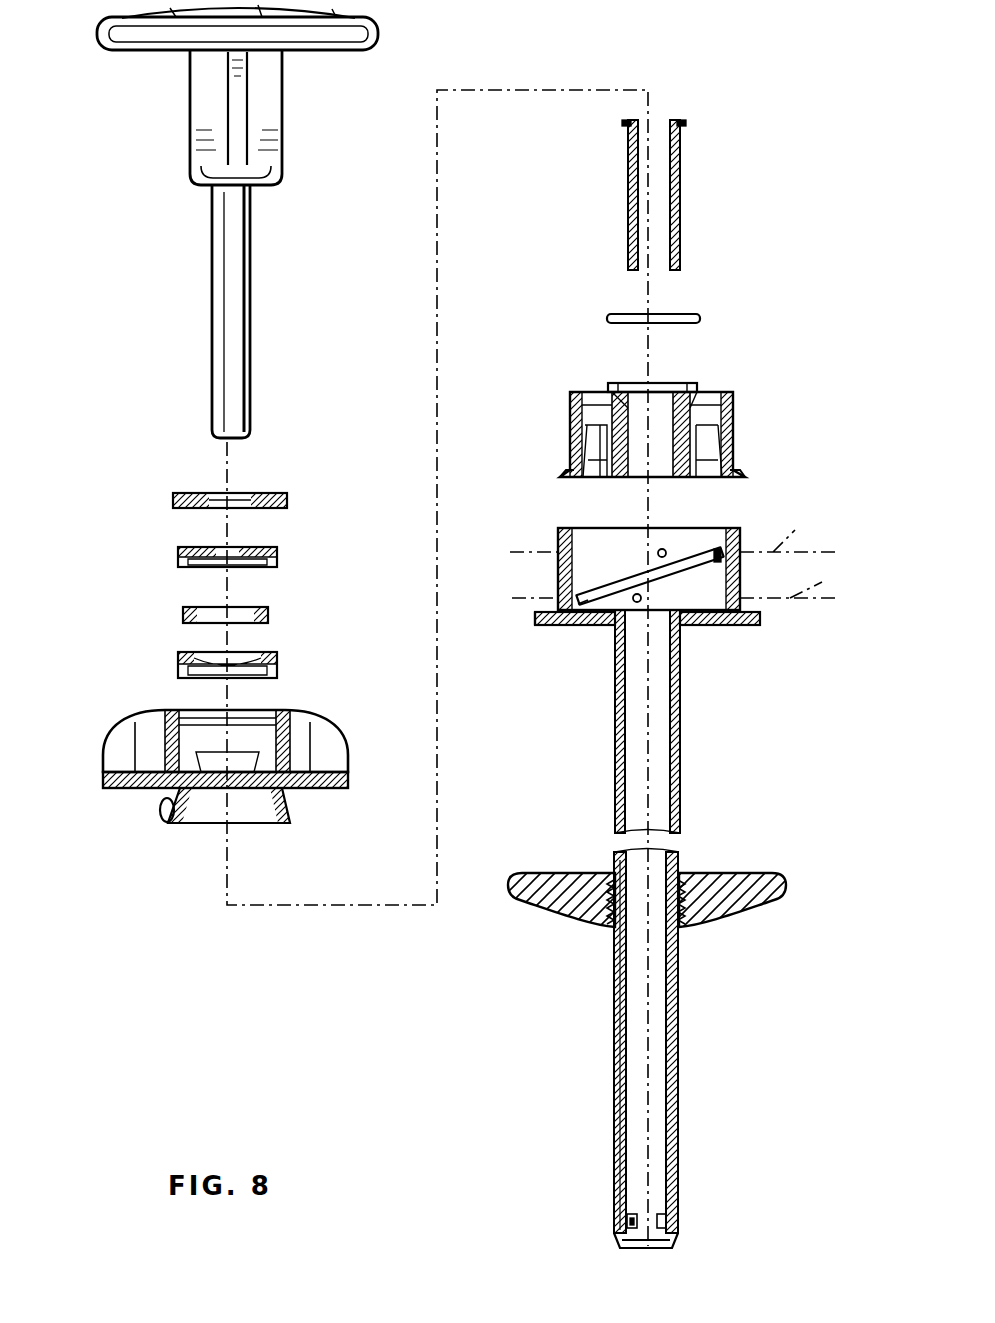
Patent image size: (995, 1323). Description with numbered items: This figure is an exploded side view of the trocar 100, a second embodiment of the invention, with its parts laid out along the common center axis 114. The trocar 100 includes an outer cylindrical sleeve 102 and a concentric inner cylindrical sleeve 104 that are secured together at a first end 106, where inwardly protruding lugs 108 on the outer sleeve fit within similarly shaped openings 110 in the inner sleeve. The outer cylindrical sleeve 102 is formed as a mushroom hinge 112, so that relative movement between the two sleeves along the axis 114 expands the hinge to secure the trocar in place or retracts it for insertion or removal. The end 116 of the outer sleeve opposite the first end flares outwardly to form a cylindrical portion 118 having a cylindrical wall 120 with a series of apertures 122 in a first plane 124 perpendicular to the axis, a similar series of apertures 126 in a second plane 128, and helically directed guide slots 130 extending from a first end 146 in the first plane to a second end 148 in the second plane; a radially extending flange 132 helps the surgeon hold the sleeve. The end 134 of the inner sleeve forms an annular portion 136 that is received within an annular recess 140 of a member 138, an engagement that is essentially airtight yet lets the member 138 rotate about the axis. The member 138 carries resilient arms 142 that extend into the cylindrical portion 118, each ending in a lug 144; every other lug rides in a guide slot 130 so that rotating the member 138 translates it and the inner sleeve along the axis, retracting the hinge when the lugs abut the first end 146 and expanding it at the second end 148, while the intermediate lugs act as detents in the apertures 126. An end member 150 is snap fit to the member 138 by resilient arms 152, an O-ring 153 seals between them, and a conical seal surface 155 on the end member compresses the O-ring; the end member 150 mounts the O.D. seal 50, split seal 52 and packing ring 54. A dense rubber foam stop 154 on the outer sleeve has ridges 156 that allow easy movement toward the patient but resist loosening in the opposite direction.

The trocar 100 is at (157, 622).
The O.D. seal 50 is at (268, 612).
The split seal 52 is at (277, 665).
The packing ring 54 is at (277, 557).
The end member 150 is at (345, 738).
The resilient arms 152 is at (290, 806).
The conical seal surface 155 is at (160, 816).
The center axis 114 is at (437, 372).
The annular portion 136 is at (684, 124).
The end of inner cylindrical sleeve 134 is at (682, 194).
The inner cylindrical sleeve 104 is at (683, 243).
The O-ring 153 is at (700, 318).
The annular recess 140 is at (632, 390).
The member 138 is at (733, 423).
The resilient arms 142 is at (573, 460).
The lug 144 is at (735, 472).
The cylindrical wall 120 is at (560, 542).
The apertures 122 is at (664, 550).
The second end of guide slots 148 is at (717, 550).
The first plane 124 is at (678, 530).
The second plane 128 is at (693, 582).
The helically directed guide slots 130 is at (628, 553).
The apertures 126 is at (642, 599).
The radially extending flange 132 is at (543, 626).
The first end of guide slots 146 is at (580, 606).
The cylindrical portion 118 is at (694, 628).
The end of outer cylindrical sleeve 116 is at (683, 687).
The outer cylindrical sleeve 102 is at (615, 762).
The dense rubber foam stop 154 is at (736, 868).
The ridges 156 is at (683, 924).
The mushroom hinge 112 is at (680, 1078).
The first end 106 is at (682, 1188).
The inwardly protruding lugs 108 is at (622, 1225).
The openings 110 is at (636, 1212).